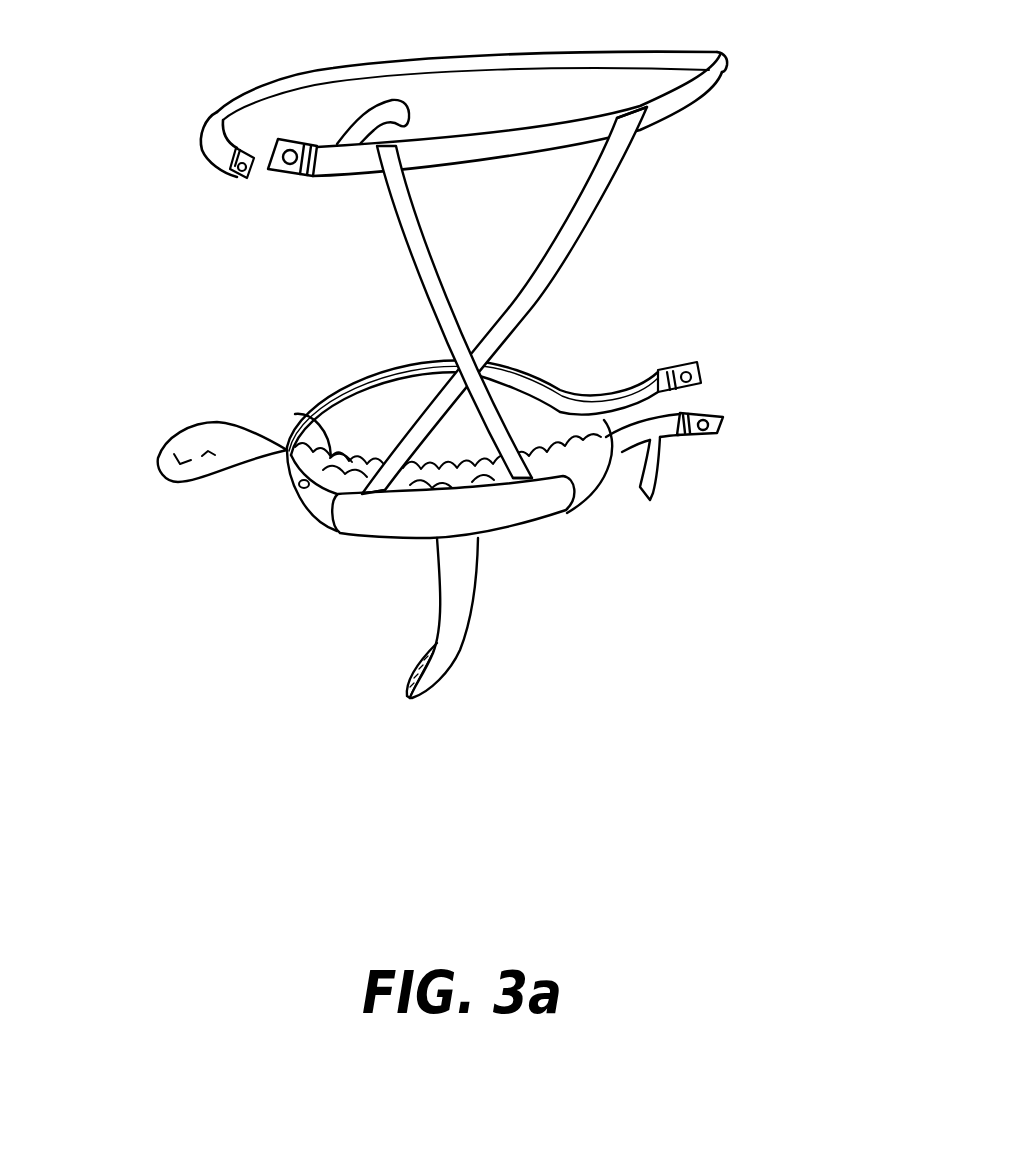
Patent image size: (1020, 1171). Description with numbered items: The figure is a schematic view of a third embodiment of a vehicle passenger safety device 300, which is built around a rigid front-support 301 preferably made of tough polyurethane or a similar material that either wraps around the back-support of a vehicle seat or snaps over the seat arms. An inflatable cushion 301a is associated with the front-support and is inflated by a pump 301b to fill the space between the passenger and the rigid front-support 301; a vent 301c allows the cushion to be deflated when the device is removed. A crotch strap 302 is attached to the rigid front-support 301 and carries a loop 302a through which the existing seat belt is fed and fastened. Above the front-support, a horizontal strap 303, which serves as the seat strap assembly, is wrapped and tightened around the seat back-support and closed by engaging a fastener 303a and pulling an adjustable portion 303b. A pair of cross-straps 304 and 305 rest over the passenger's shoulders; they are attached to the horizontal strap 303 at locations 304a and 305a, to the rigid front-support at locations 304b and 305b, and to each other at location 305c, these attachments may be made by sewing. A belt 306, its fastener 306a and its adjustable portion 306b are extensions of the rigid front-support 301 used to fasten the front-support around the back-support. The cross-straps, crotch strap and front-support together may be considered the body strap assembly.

The vehicle passenger safety device 300 is at (804, 193).
The rigid front-support 301 is at (518, 534).
The inflatable cushion 301a is at (295, 414).
The pump 301b is at (156, 460).
The vent 301c is at (290, 487).
The crotch strap 302 is at (477, 597).
The loop 302a is at (412, 699).
The horizontal strap 303 is at (727, 64).
The fastener 303a is at (230, 173).
The adjustable portion 303b is at (412, 123).
The cross-strap 304 is at (412, 258).
The attachment location 304a is at (380, 172).
The attachment location 304b is at (565, 500).
The cross-strap 305 is at (600, 207).
The attachment location 305a is at (640, 137).
The attachment location 305b is at (337, 533).
The attachment location 305c is at (503, 364).
The belt 306 is at (642, 388).
The fastener 306a is at (700, 373).
The adjustable portion 306b is at (660, 480).